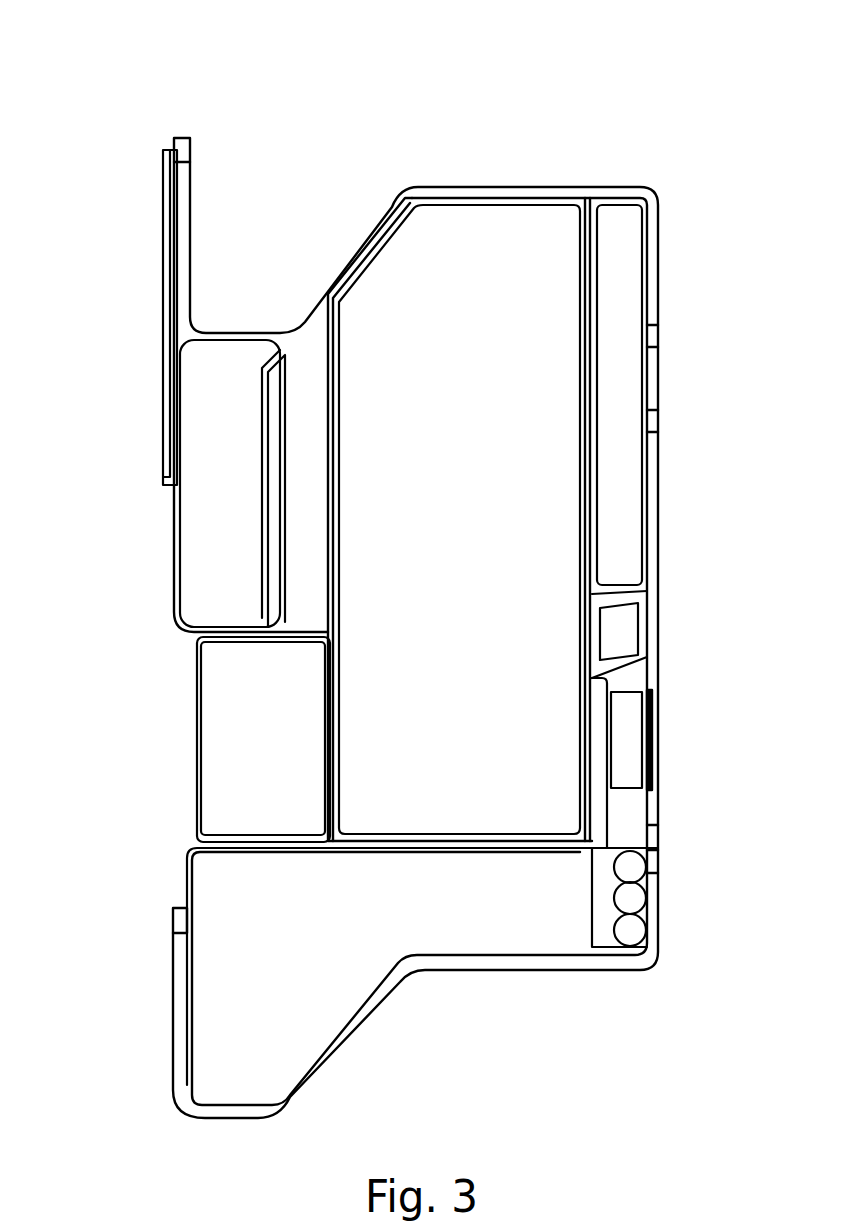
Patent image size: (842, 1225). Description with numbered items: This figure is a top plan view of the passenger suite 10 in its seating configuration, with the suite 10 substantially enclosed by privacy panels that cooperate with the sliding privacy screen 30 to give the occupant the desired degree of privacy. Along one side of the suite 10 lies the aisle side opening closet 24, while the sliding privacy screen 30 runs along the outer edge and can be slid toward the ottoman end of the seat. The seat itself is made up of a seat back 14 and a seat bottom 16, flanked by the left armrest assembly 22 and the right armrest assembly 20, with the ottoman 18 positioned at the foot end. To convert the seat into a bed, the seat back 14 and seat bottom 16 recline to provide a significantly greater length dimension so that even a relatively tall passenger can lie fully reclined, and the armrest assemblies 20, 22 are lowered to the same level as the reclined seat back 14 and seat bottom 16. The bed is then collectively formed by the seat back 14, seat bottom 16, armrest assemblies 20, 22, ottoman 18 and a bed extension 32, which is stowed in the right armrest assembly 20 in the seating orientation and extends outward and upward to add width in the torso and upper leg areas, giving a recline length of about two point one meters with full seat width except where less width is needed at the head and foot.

The suite 10 is at (270, 196).
The seat back 14 is at (555, 495).
The seat bottom 16 is at (523, 728).
The ottoman 18 is at (357, 910).
The right armrest assembly 20 is at (307, 490).
The left armrest assembly 22 is at (628, 307).
The aisle side opening closet 24 is at (225, 595).
The sliding privacy screen 30 is at (165, 340).
The bed extension 32 is at (237, 751).